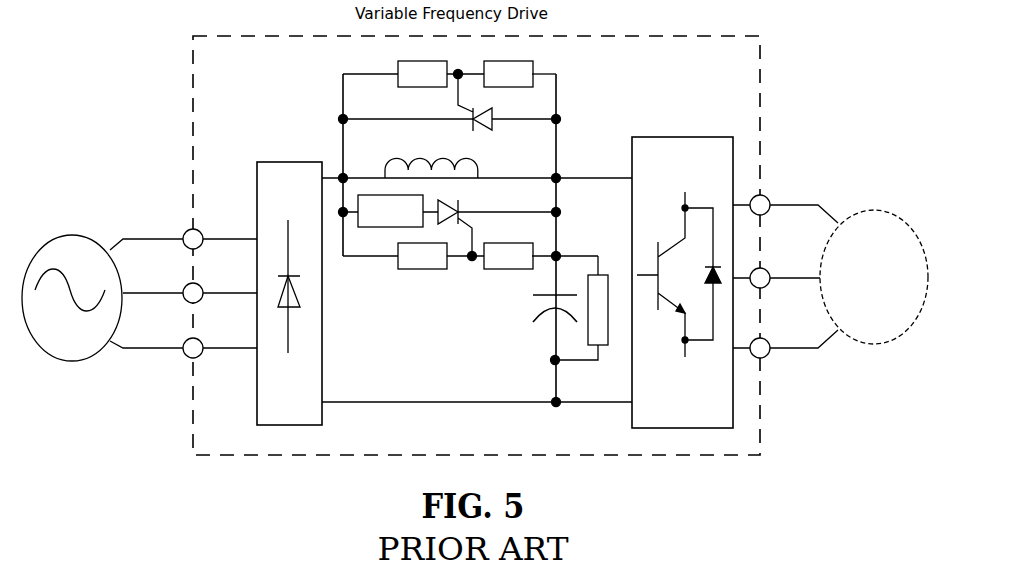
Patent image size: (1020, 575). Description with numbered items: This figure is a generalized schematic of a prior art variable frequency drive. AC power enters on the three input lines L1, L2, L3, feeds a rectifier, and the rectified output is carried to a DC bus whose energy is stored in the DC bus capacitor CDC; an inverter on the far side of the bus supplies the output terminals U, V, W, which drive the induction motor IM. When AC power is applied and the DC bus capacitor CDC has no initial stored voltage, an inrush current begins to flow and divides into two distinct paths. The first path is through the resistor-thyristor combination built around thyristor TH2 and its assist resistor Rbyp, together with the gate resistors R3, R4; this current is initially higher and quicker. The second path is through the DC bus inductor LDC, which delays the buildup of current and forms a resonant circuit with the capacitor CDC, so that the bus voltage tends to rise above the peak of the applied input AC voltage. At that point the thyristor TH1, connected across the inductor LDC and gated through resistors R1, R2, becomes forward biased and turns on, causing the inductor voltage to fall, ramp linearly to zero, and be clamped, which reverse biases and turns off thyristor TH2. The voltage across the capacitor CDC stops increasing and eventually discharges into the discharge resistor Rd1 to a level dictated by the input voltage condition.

The input line L1 terminal L1 is at (183, 234).
The input line L2 terminal L2 is at (190, 287).
The input line L3 terminal L3 is at (183, 342).
The resistor R1 is at (520, 74).
The resistor R2 is at (413, 74).
The resistor R3 is at (413, 256).
The resistor R4 is at (541, 256).
The bypass resistor Rbyp is at (390, 211).
The thyristor TH1 is at (449, 113).
The thyristor TH2 is at (497, 223).
The DC bus inductor LDC is at (431, 157).
The DC bus capacitor CDC is at (542, 316).
The discharge resistor Rd1 is at (582, 308).
The output terminal U is at (785, 198).
The output terminal V is at (776, 267).
The output terminal W is at (785, 338).
The induction motor IM is at (874, 277).